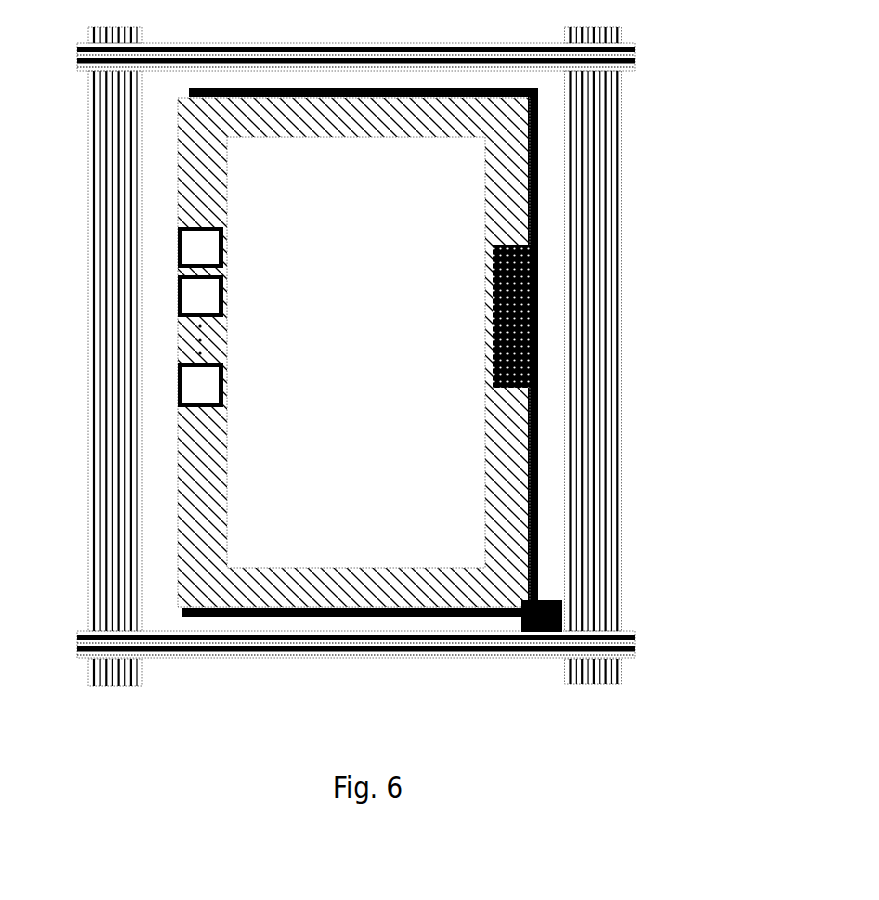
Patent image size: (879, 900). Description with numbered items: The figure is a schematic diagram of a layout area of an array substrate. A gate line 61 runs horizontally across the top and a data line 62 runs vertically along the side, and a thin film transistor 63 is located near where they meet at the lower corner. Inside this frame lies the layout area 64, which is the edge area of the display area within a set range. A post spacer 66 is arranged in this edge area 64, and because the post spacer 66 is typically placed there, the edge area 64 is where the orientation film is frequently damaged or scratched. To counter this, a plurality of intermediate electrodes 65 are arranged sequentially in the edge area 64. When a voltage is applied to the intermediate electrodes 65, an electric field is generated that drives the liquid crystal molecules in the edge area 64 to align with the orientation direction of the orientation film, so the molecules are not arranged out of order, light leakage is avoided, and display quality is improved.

The gate line 61 is at (636, 55).
The data line 62 is at (613, 116).
The thin film transistor 63 is at (540, 632).
The layout area 64 is at (183, 165).
The intermediate electrodes 65 is at (178, 363).
The post spacer 66 is at (538, 316).